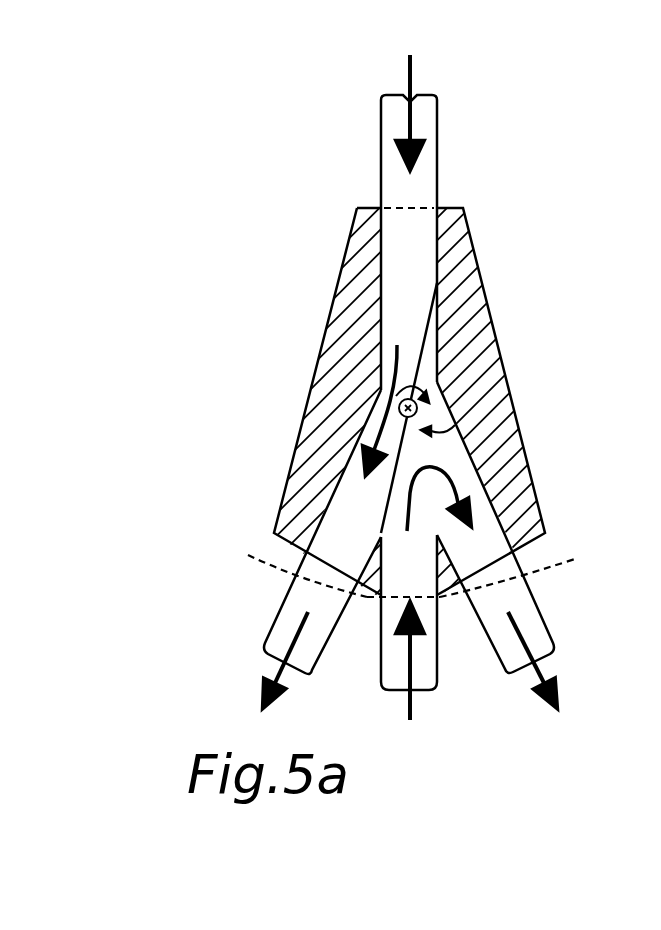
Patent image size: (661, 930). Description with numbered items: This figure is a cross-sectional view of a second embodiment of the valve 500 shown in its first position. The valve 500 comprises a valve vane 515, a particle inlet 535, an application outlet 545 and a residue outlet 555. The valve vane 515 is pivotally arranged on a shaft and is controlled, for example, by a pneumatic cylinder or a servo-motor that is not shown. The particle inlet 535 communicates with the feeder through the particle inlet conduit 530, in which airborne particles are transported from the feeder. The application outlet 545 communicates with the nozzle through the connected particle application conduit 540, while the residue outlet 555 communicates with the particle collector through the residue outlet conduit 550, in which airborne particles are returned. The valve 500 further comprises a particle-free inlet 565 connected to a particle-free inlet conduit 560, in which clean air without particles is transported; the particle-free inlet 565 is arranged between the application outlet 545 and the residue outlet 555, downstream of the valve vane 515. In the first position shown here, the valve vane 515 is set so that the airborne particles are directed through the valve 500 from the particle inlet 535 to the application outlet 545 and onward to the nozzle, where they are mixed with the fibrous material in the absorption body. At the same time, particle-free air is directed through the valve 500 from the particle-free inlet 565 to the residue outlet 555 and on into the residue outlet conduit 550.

The valve 500 is at (473, 318).
The valve vane 515 is at (482, 397).
The particle inlet conduit 530 is at (427, 123).
The particle inlet 535 is at (410, 208).
The particle application conduit 540 is at (290, 608).
The application outlet 545 is at (285, 567).
The residue outlet conduit 550 is at (537, 627).
The residue outlet 555 is at (533, 574).
The particle-free inlet conduit 560 is at (428, 653).
The particle-free inlet 565 is at (388, 598).